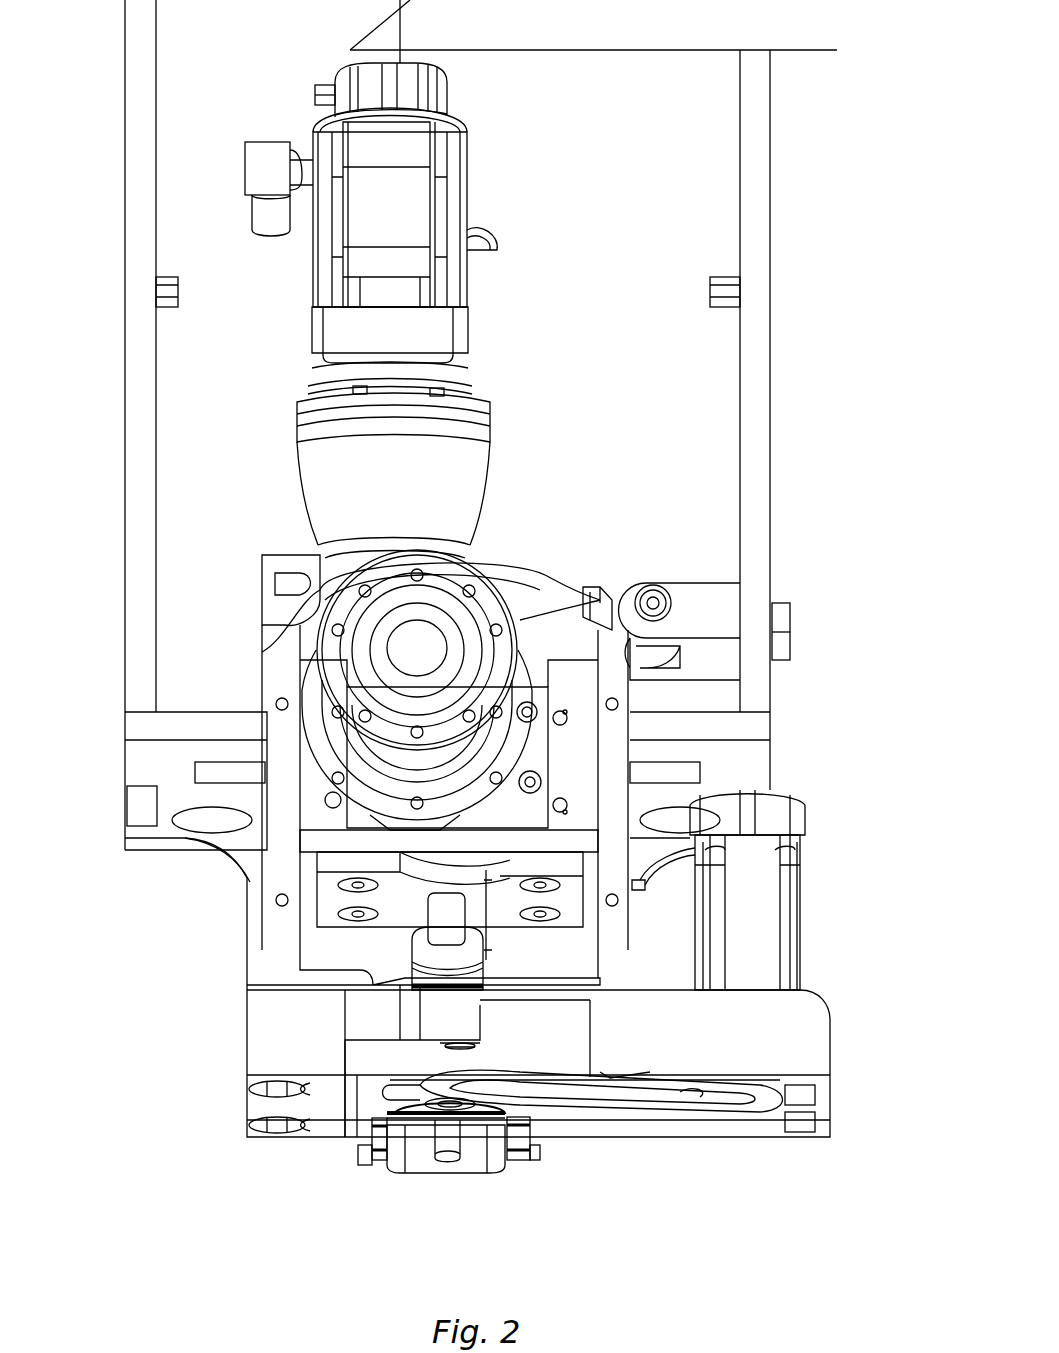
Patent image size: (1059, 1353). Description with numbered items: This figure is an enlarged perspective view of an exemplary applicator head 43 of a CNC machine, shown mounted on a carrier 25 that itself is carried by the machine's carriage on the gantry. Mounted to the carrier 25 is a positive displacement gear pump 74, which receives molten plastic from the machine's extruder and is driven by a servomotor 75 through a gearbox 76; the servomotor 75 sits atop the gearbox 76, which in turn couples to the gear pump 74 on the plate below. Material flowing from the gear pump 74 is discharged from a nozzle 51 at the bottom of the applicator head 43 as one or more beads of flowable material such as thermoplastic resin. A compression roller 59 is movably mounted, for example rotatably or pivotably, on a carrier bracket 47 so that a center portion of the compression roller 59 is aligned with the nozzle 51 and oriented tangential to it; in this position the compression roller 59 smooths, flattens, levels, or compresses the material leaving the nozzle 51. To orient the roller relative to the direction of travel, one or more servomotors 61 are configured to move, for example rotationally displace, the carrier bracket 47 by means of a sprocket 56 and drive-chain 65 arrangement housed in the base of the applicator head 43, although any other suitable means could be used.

The carrier 25 is at (788, 548).
The applicator head 43 is at (216, 1042).
The carrier bracket 47 is at (536, 1140).
The nozzle 51 is at (446, 1166).
The sprocket 56 is at (535, 1128).
The compression roller 59 is at (478, 1168).
The servomotor 61 is at (795, 895).
The drive-chain 65 is at (678, 1118).
The positive displacement gear pump 74 is at (568, 736).
The servomotor 75 is at (357, 72).
The gearbox 76 is at (300, 650).